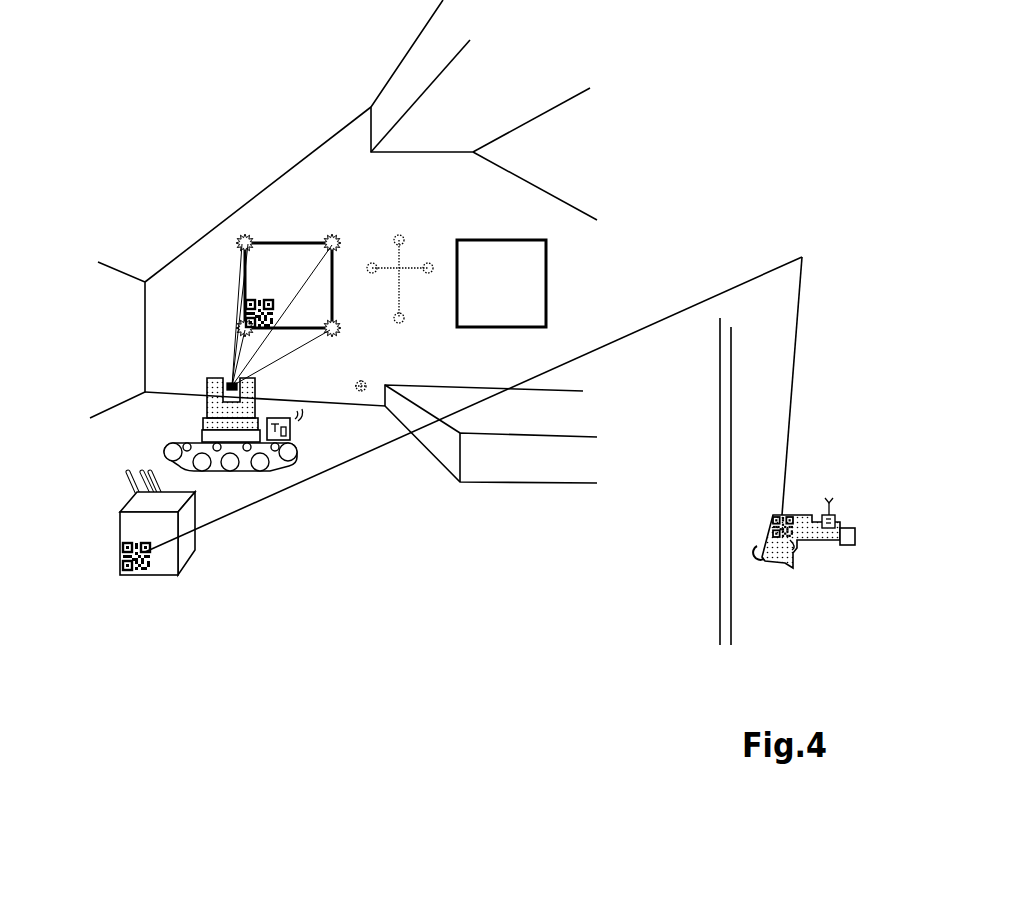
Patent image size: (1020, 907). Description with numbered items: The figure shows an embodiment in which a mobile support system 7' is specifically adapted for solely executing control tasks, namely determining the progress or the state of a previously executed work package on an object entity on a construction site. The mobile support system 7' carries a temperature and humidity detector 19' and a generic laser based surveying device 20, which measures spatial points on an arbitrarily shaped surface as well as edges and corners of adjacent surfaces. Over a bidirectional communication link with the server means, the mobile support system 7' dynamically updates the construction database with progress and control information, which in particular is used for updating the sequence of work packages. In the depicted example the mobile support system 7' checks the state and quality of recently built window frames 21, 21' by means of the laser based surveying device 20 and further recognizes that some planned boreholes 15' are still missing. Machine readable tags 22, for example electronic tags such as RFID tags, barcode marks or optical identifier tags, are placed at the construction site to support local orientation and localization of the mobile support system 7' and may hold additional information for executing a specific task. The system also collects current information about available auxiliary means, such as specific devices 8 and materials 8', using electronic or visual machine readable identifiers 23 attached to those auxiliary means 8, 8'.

The planned boreholes 15' is at (343, 225).
The window frame 21 is at (259, 240).
The window frame 21' is at (557, 280).
The machine readable tag 22 is at (156, 256).
The generic laser based surveying device 20 is at (186, 331).
The mobile support system 7' is at (266, 491).
The temperature and humidity detector 19' is at (373, 475).
The materials 8' is at (216, 547).
The machine readable identifiers 23 is at (802, 257).
The specific devices 8 is at (810, 558).